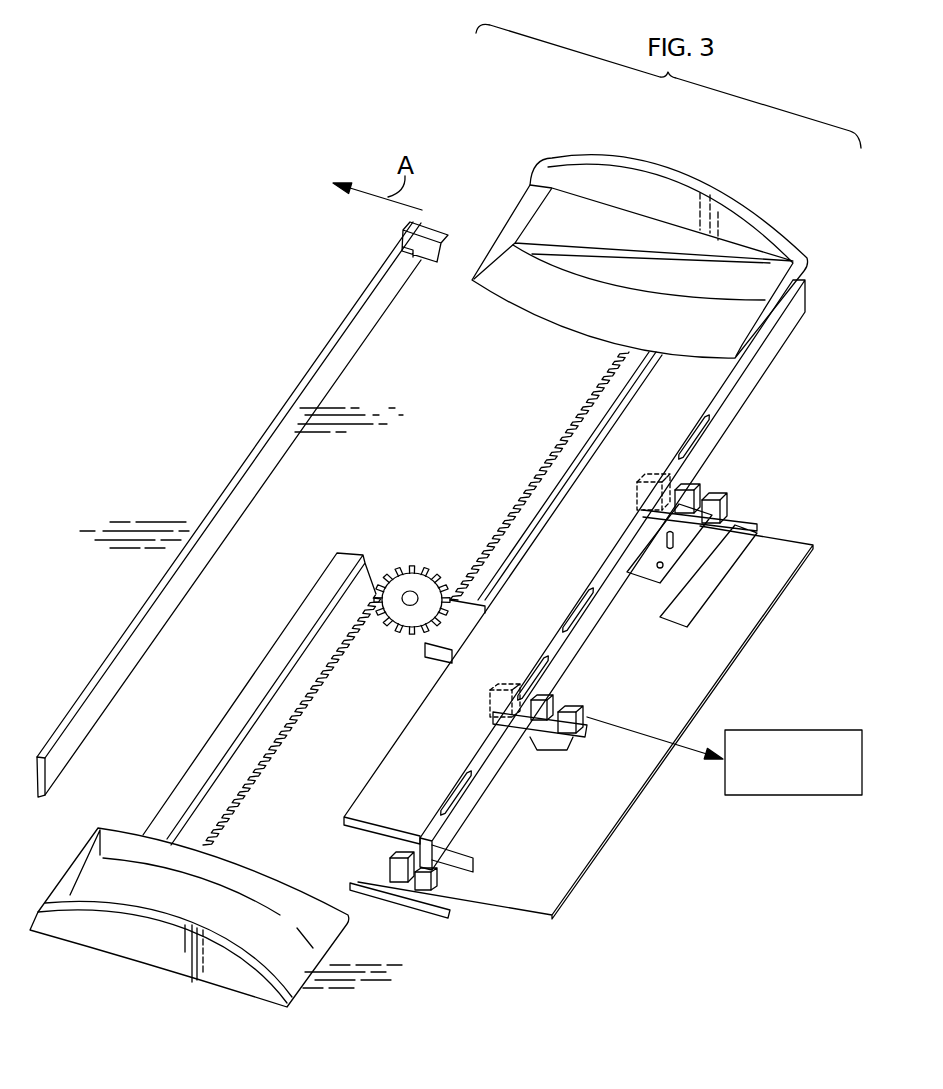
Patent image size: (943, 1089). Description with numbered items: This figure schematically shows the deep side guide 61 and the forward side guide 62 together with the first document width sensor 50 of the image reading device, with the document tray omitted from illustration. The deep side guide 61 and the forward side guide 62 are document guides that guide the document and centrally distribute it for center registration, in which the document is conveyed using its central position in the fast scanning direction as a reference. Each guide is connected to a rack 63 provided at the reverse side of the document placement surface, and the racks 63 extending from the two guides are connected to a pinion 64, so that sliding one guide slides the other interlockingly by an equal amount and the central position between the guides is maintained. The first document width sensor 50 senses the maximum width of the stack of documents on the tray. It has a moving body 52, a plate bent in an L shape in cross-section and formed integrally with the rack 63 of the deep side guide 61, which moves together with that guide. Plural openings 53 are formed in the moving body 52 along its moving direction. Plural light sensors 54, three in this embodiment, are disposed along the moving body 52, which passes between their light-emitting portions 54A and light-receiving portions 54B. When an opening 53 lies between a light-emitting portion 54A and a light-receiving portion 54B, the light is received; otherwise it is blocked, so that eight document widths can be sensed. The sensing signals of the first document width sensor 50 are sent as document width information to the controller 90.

The first document width sensor 50 is at (430, 983).
The moving body 52 is at (397, 768).
The openings 53 is at (712, 455).
The light sensors 54 is at (712, 537).
The light-emitting portions 54A is at (498, 688).
The light-receiving portions 54B is at (698, 487).
The deep side guide 61 is at (676, 190).
The forward side guide 62 is at (150, 952).
The racks 63 is at (553, 470).
The pinion 64 is at (402, 574).
The controller 90 is at (789, 796).